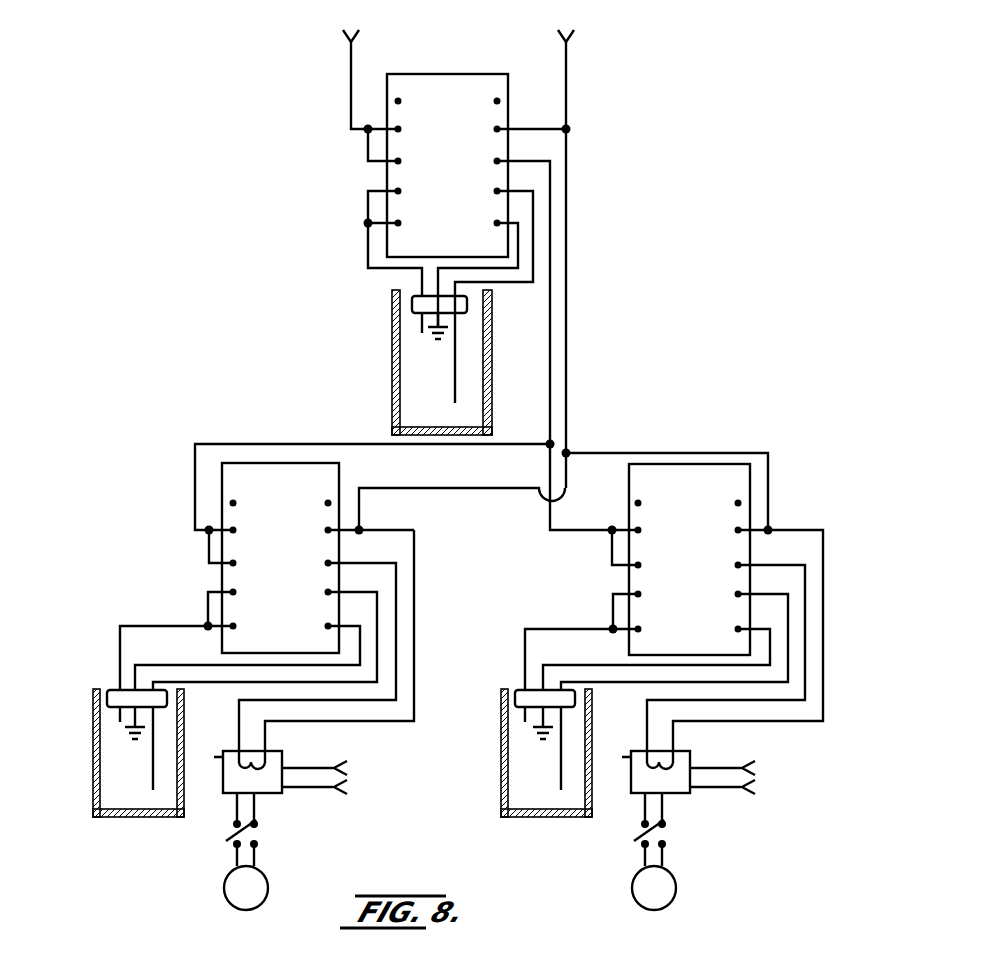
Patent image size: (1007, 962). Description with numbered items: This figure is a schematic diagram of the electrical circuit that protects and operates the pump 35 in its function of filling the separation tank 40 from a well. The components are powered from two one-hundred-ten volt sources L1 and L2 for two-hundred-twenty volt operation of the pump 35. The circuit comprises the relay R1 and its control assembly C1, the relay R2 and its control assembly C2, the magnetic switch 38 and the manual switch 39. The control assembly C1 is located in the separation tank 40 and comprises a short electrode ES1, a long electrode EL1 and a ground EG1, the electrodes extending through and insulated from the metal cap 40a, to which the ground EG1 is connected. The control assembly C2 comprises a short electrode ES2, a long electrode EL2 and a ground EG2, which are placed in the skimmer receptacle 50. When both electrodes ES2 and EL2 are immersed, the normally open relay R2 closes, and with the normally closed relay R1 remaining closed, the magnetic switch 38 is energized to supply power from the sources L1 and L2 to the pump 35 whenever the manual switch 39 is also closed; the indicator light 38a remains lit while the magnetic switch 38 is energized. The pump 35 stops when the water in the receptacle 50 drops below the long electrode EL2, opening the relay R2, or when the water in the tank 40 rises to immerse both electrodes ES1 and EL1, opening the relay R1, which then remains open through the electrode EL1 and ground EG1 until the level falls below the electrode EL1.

The 110V source L1 is at (368, 83).
The 110V source L2 is at (635, 270).
The relay R1 is at (398, 70).
The relay R2 is at (486, 559).
The liquid level control assembly C1 is at (412, 305).
The short electrode ES1 is at (420, 325).
The ground EG1 is at (437, 337).
The separation tank 40 is at (392, 394).
The metal cap 40a is at (467, 310).
The long electrode EL1 is at (455, 380).
The liquid level control assembly C2 is at (96, 699).
The short electrode ES2 is at (118, 712).
The ground EG2 is at (128, 735).
The skimmer receptacle 50 is at (93, 785).
The long electrode EL2 is at (150, 784).
The indicator light 38a is at (215, 757).
The magnetic switch 38 is at (232, 786).
The manual switch 39 is at (226, 839).
The pump 35 is at (224, 892).